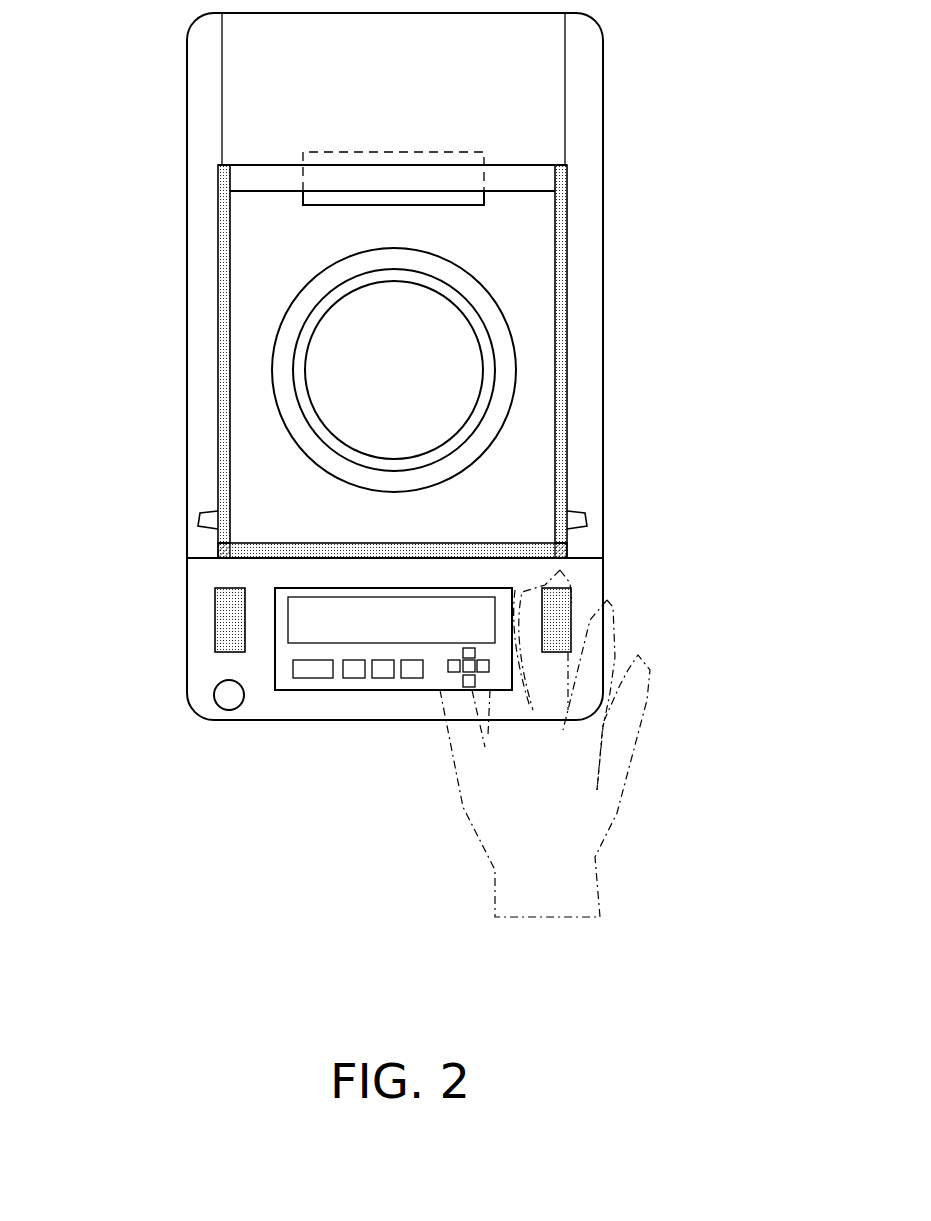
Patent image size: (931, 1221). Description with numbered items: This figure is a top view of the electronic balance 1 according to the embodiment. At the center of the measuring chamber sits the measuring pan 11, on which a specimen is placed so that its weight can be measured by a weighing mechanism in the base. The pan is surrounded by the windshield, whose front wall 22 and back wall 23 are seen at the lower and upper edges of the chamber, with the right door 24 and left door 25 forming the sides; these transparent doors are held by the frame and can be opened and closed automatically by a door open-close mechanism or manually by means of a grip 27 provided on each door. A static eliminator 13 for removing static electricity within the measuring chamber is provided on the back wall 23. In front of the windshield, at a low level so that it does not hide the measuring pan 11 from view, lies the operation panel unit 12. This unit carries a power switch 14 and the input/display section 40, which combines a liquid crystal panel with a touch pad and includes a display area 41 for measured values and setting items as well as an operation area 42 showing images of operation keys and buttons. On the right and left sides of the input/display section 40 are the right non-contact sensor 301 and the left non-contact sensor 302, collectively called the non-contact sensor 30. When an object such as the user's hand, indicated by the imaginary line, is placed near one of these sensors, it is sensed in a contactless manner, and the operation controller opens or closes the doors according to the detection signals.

The electronic balance 1 is at (681, 81).
The measuring pan 11 is at (462, 338).
The operation panel unit 12 is at (257, 723).
The static eliminator 13 is at (467, 207).
The power switch 14 is at (220, 710).
The front wall 22 is at (257, 552).
The back wall 23 is at (237, 180).
The right door 24 is at (568, 352).
The left door 25 is at (217, 300).
The grip 27 is at (198, 515).
The non-contact sensor 30 is at (401, 617).
The right non-contact sensor 301 is at (572, 608).
The left non-contact sensor 302 is at (213, 620).
The input/display section 40 is at (323, 690).
The display area 41 is at (292, 638).
The operation area 42 is at (375, 683).